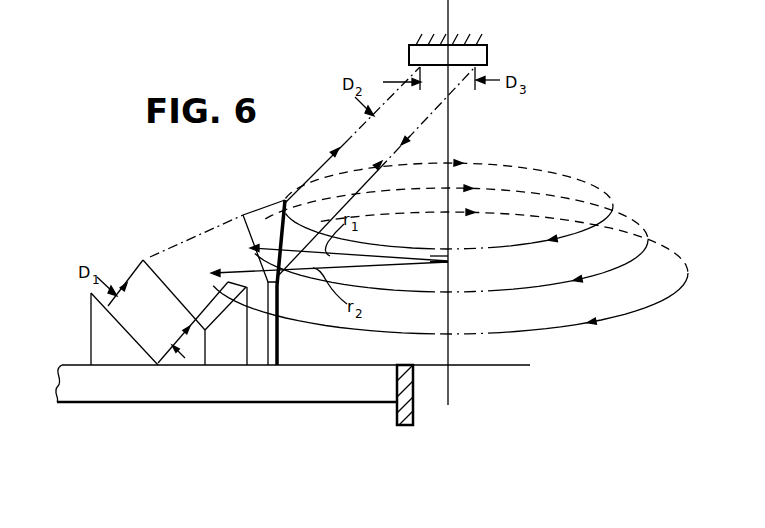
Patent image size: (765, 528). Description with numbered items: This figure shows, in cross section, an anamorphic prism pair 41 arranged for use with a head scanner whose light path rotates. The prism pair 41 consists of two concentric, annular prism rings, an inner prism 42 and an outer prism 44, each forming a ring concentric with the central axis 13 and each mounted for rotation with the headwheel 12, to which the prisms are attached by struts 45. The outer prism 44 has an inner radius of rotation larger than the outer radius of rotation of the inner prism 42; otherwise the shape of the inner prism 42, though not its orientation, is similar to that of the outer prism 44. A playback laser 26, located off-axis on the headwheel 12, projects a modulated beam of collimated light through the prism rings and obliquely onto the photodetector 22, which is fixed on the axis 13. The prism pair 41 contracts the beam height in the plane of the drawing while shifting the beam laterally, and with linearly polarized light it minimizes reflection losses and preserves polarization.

The headwheel 12 is at (145, 385).
The central axis 13 is at (446, 16).
The photodetector 22 is at (488, 58).
The playback laser 26 is at (91, 312).
The anamorphic prism pair 41 is at (205, 218).
The inner prism ring 42 is at (268, 212).
The outer prism ring 44 is at (146, 255).
The struts 45 is at (230, 345).